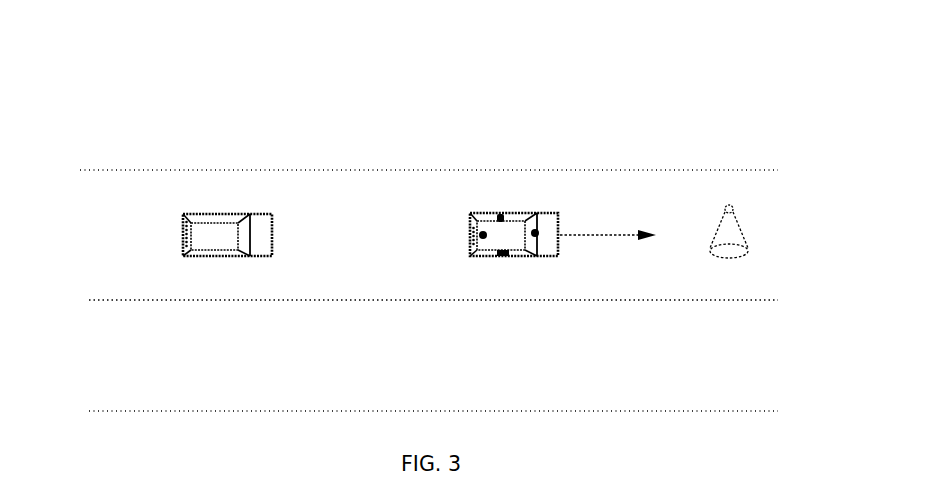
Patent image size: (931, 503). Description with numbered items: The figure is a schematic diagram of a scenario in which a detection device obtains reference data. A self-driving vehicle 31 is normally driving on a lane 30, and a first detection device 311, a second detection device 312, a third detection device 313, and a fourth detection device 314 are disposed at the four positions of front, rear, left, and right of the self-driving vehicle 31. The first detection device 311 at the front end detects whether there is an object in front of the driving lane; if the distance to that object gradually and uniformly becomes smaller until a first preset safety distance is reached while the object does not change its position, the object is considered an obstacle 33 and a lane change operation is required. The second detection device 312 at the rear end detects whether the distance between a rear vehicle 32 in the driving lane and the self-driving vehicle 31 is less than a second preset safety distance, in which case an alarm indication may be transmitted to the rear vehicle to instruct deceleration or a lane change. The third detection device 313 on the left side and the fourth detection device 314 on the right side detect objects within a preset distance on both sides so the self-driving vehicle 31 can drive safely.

The lane 30 is at (418, 216).
The self-driving vehicle 31 is at (579, 210).
The vehicle 32 is at (212, 213).
The obstacle 33 is at (729, 205).
The first detection device 311 is at (540, 230).
The second detection device 312 is at (480, 214).
The third detection device 313 is at (500, 214).
The fourth detection device 314 is at (500, 257).